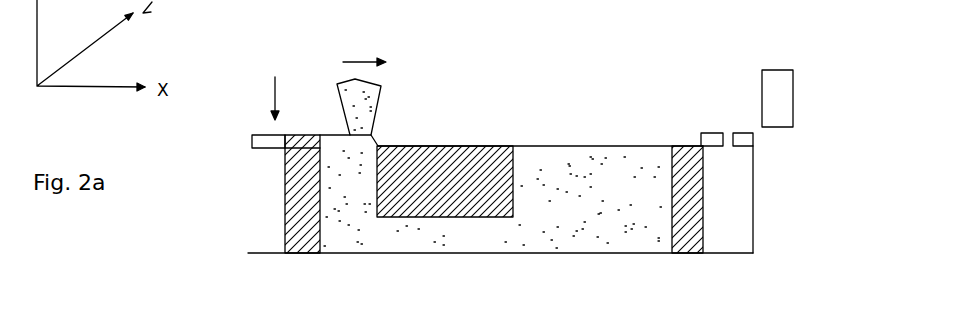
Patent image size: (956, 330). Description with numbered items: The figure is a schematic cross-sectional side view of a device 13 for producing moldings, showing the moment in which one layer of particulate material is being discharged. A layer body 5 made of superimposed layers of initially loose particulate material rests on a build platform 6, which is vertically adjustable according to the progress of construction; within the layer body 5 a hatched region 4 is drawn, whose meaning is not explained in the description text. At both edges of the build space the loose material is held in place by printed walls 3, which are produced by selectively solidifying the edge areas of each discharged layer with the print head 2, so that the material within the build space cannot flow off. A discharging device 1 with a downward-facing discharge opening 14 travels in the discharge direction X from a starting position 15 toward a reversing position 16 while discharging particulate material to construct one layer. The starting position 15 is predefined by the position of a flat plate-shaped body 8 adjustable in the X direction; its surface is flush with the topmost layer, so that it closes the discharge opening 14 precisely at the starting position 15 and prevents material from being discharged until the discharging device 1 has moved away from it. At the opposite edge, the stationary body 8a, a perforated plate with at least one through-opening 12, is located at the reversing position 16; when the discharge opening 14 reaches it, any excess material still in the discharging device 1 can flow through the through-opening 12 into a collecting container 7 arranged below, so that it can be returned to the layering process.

The discharging device 1 is at (379, 107).
The print head 2 is at (778, 78).
The printed walls 3 is at (285, 213).
The object being built 4 is at (478, 145).
The layer body 5 is at (581, 166).
The build platform 6 is at (545, 253).
The collecting container 7 is at (742, 233).
The body 8 is at (250, 143).
The body 8a is at (753, 138).
The through-opening 12 is at (736, 154).
The device 13 is at (569, 80).
The discharge opening 14 is at (342, 130).
The starting position 15 is at (276, 88).
The reversing position 16 is at (723, 131).